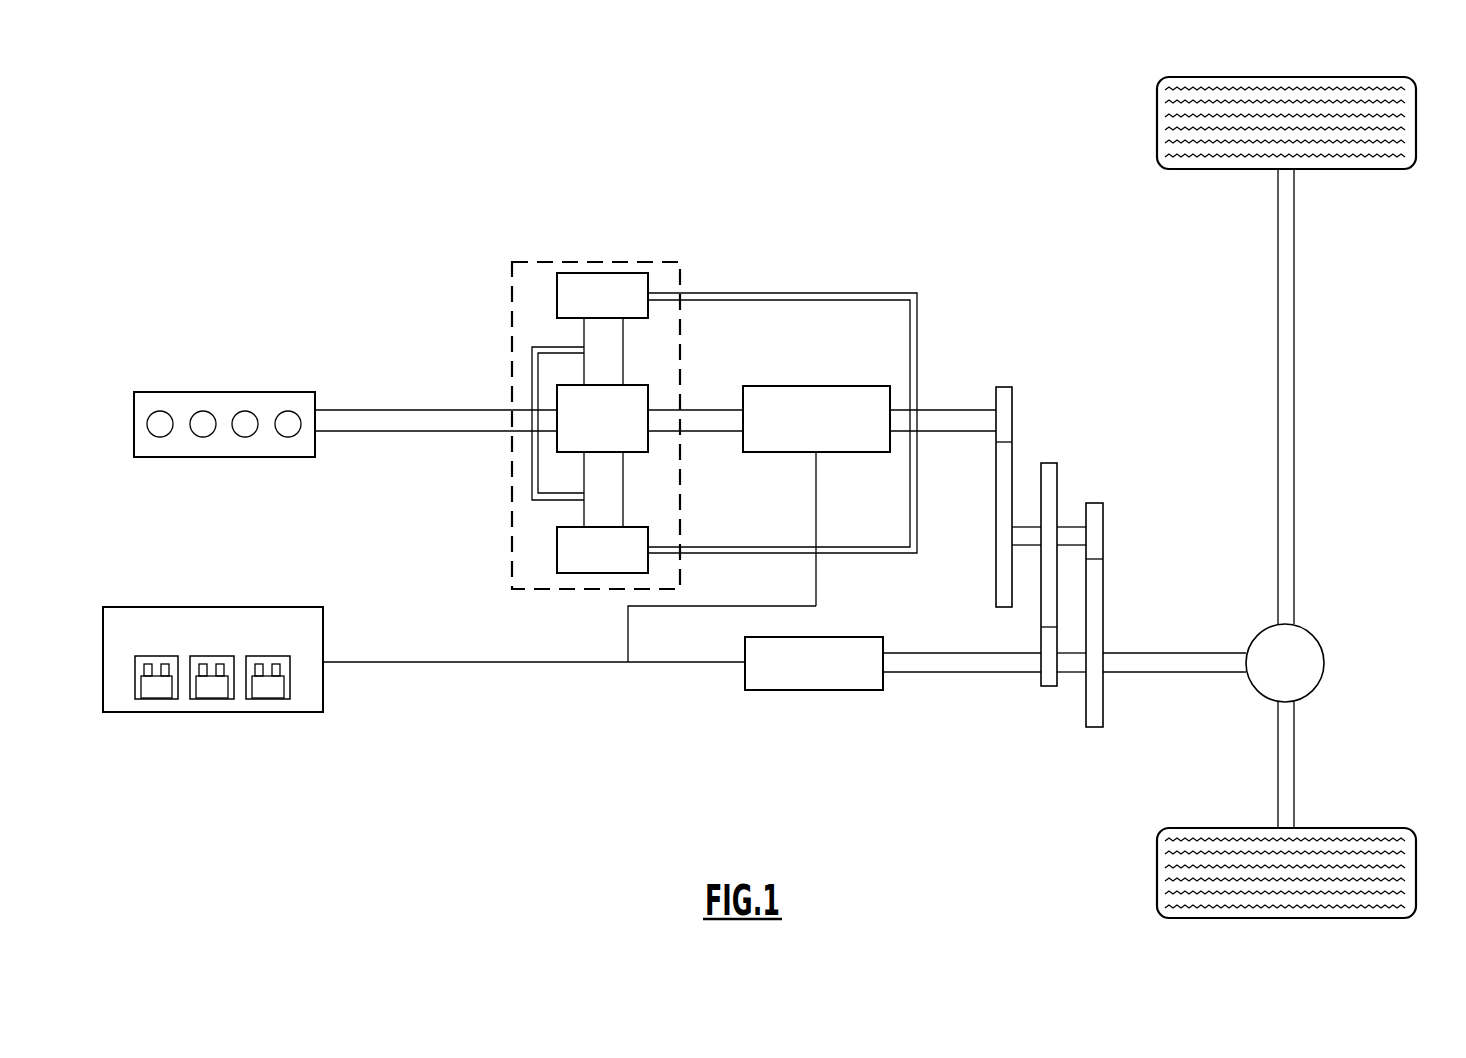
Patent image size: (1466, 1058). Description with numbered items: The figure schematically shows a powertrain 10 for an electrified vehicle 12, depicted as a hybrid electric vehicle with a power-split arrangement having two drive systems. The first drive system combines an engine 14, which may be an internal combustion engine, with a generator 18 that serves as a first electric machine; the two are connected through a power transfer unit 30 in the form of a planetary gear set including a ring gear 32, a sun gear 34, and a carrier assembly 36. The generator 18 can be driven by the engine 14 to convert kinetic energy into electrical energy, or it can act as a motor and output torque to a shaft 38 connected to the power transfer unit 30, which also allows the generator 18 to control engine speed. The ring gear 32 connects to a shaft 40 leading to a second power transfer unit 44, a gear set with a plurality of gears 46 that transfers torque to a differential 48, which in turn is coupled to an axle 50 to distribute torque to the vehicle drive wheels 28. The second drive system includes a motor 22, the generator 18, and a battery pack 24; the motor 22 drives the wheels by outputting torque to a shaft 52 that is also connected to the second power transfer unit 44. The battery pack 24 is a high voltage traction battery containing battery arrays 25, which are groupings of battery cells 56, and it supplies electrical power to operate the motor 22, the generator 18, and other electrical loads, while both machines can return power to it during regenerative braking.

The powertrain 10 is at (349, 283).
The electrified vehicle 12 is at (775, 213).
The engine 14 is at (152, 392).
The generator 18 is at (834, 386).
The motor 22 is at (883, 687).
The battery pack 24 is at (244, 661).
The battery array 25 is at (212, 678).
The vehicle drive wheel 28 is at (1416, 110).
The power transfer unit 30 is at (561, 431).
The ring gear 32 is at (557, 296).
The sun gear 34 is at (557, 394).
The carrier assembly 36 is at (532, 482).
The shaft 38 is at (705, 410).
The shaft 40 is at (942, 410).
The second power transfer unit 44 is at (1100, 514).
The gears 46 is at (1012, 418).
The differential 48 is at (1318, 683).
The axle 50 is at (1295, 358).
The shaft 52 is at (970, 672).
The battery cells 56 is at (263, 693).